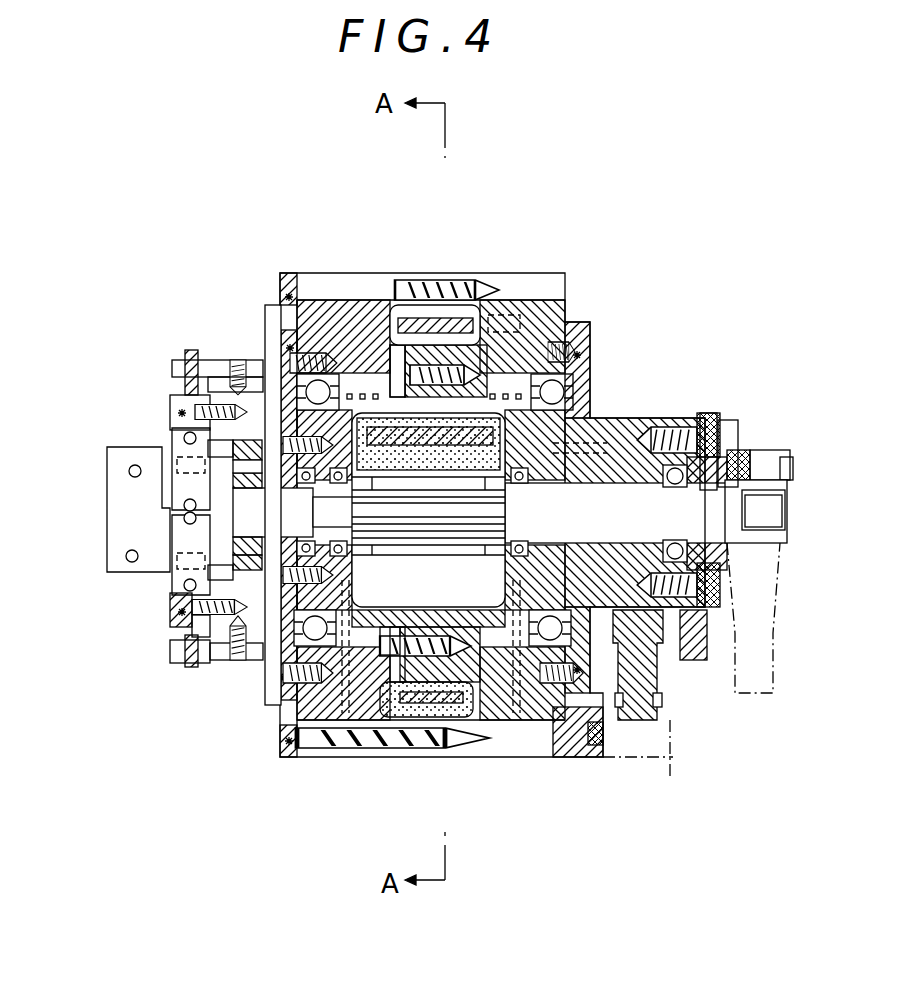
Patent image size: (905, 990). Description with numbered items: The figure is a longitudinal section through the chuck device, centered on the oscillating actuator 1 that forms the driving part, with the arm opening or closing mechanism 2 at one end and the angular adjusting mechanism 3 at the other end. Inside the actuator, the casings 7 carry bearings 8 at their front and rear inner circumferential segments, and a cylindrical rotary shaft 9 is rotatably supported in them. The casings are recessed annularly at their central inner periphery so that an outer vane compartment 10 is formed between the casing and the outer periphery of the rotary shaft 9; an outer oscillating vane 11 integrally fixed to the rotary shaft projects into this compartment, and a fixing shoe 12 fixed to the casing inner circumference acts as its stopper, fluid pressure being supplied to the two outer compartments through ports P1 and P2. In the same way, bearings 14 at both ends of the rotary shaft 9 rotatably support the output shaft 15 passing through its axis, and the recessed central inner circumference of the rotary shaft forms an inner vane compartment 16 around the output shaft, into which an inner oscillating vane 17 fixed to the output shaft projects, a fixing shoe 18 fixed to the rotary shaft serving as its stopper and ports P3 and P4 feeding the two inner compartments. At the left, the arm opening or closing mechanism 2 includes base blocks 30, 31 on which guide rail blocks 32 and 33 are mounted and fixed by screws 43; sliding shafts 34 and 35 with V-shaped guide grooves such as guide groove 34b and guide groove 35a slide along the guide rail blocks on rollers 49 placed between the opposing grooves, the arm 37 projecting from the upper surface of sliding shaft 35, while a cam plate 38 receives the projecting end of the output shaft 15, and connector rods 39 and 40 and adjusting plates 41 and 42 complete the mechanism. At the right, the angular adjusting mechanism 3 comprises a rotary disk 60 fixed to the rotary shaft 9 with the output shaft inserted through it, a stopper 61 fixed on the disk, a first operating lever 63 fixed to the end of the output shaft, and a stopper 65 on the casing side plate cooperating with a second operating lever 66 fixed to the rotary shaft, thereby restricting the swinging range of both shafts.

The oscillating actuator 1 is at (475, 262).
The arm opening or closing mechanism 2 is at (212, 350).
The angular adjusting mechanism 3 is at (782, 447).
The casing 7 is at (315, 292).
The bearing 8 is at (287, 300).
The rotary shaft 9 is at (338, 300).
The outer vane compartment 10 is at (398, 350).
The outer oscillating vane 11 is at (428, 722).
The fixing shoe 12 is at (435, 322).
The bearing 14 is at (715, 418).
The output shaft 15 is at (637, 500).
The inner vane compartment 16 is at (376, 740).
The inner oscillating vane 17 is at (506, 742).
The fixing shoe 18 is at (588, 322).
The base block 30 is at (243, 663).
The base block 31 is at (242, 372).
The guide rail block 32 is at (207, 620).
The guide rail block 33 is at (180, 388).
The sliding shaft 34 is at (190, 540).
The guide groove 34b is at (175, 518).
The sliding shaft 35 is at (172, 445).
The guide groove 35a is at (185, 437).
The arm 37 is at (117, 488).
The cam plate 38 is at (227, 657).
The connector rod 39 is at (180, 650).
The connector rod 40 is at (205, 425).
The adjusting plate 41 is at (200, 670).
The adjusting plate 42 is at (190, 360).
The screw 43 is at (200, 412).
The roller 49 is at (178, 605).
The rotary disk 60 is at (697, 647).
The stopper 61 is at (733, 425).
The first operating lever 63 is at (760, 625).
The stopper 65 is at (662, 762).
The second operating lever 66 is at (657, 670).
The port P1 is at (500, 298).
The port P2 is at (620, 425).
The port P3 is at (518, 760).
The port P4 is at (340, 752).